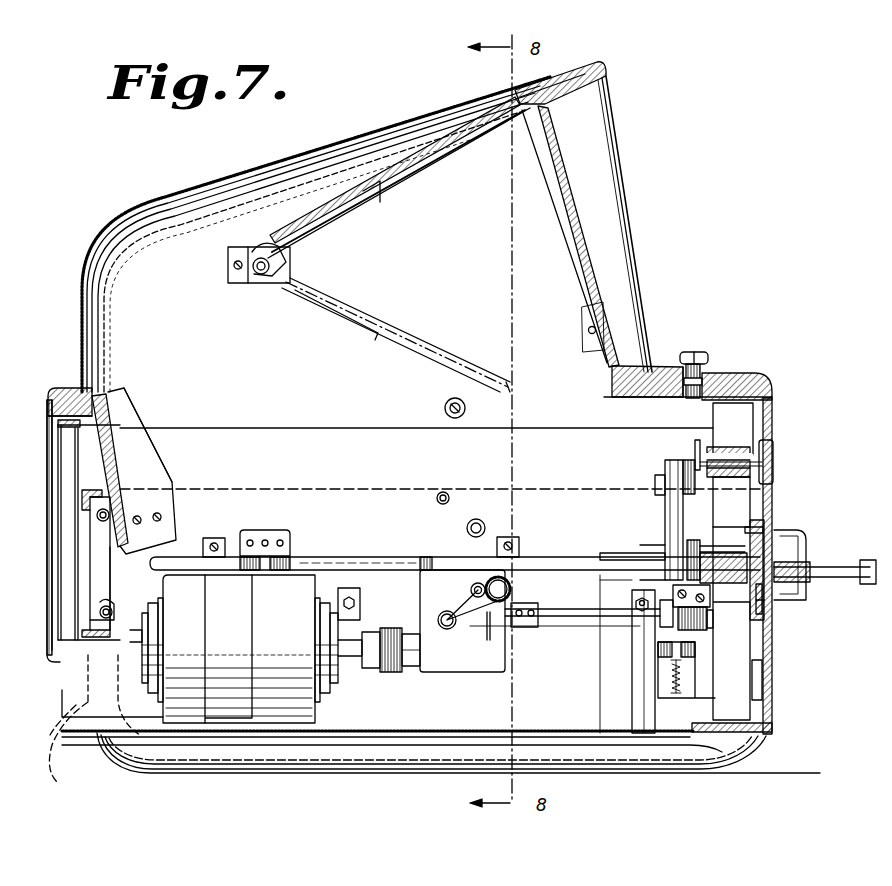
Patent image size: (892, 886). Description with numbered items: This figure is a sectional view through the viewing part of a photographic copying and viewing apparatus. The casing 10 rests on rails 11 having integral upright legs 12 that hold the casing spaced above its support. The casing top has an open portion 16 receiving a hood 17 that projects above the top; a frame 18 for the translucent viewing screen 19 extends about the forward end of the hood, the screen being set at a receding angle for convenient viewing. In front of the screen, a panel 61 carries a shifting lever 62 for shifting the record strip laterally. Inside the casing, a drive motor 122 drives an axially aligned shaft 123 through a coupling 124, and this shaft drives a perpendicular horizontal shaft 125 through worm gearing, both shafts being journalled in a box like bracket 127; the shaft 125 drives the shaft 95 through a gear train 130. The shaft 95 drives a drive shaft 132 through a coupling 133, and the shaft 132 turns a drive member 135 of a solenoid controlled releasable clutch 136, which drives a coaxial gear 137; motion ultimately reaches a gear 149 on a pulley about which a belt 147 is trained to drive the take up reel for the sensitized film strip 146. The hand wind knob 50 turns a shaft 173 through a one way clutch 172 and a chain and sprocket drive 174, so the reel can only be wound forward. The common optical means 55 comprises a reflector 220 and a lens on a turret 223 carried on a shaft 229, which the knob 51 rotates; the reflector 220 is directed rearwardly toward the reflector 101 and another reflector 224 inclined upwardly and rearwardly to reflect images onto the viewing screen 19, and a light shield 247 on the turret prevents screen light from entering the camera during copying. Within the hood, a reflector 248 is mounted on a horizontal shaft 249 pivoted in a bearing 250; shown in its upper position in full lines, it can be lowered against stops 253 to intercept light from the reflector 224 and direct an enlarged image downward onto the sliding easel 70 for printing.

The casing 10 is at (92, 740).
The rails 11 is at (378, 762).
The upright legs 12 is at (68, 751).
The open portion 16 is at (92, 386).
The hood 17 is at (300, 150).
The frame 18 is at (582, 70).
The viewing screen 19 is at (598, 218).
The knob 50 is at (776, 462).
The knob 51 is at (796, 588).
The common optical means 55 is at (716, 545).
The panel 61 is at (672, 370).
The shifting lever 62 is at (712, 353).
The sliding easel 70 is at (328, 550).
The shaft 95 is at (478, 600).
The reflector 101 is at (384, 560).
The drive motor 122 is at (185, 698).
The shaft 123 is at (410, 658).
The coupling 124 is at (378, 668).
The horizontal shaft 125 is at (440, 618).
The box like bracket 127 is at (470, 650).
The gear train 130 is at (474, 578).
The drive shaft 132 is at (562, 590).
The coupling 133 is at (526, 627).
The drive member 135 is at (662, 600).
The solenoid controlled releasable clutch 136 is at (665, 628).
The coaxial gear 137 is at (710, 620).
The sensitized film strip 146 is at (694, 562).
The belt 147 is at (668, 512).
The gear 149 is at (698, 545).
The one way clutch 172 is at (726, 448).
The shaft 173 is at (732, 488).
The chain and sprocket drive 174 is at (698, 458).
The reflector 220 is at (756, 596).
The turret 223 is at (776, 526).
The reflector 224 is at (120, 466).
The shaft 229 is at (792, 560).
The light shield 247 is at (604, 555).
The reflector 248 is at (412, 172).
The horizontal shaft 249 is at (262, 275).
The bearing 250 is at (242, 282).
The stops 253 is at (440, 405).